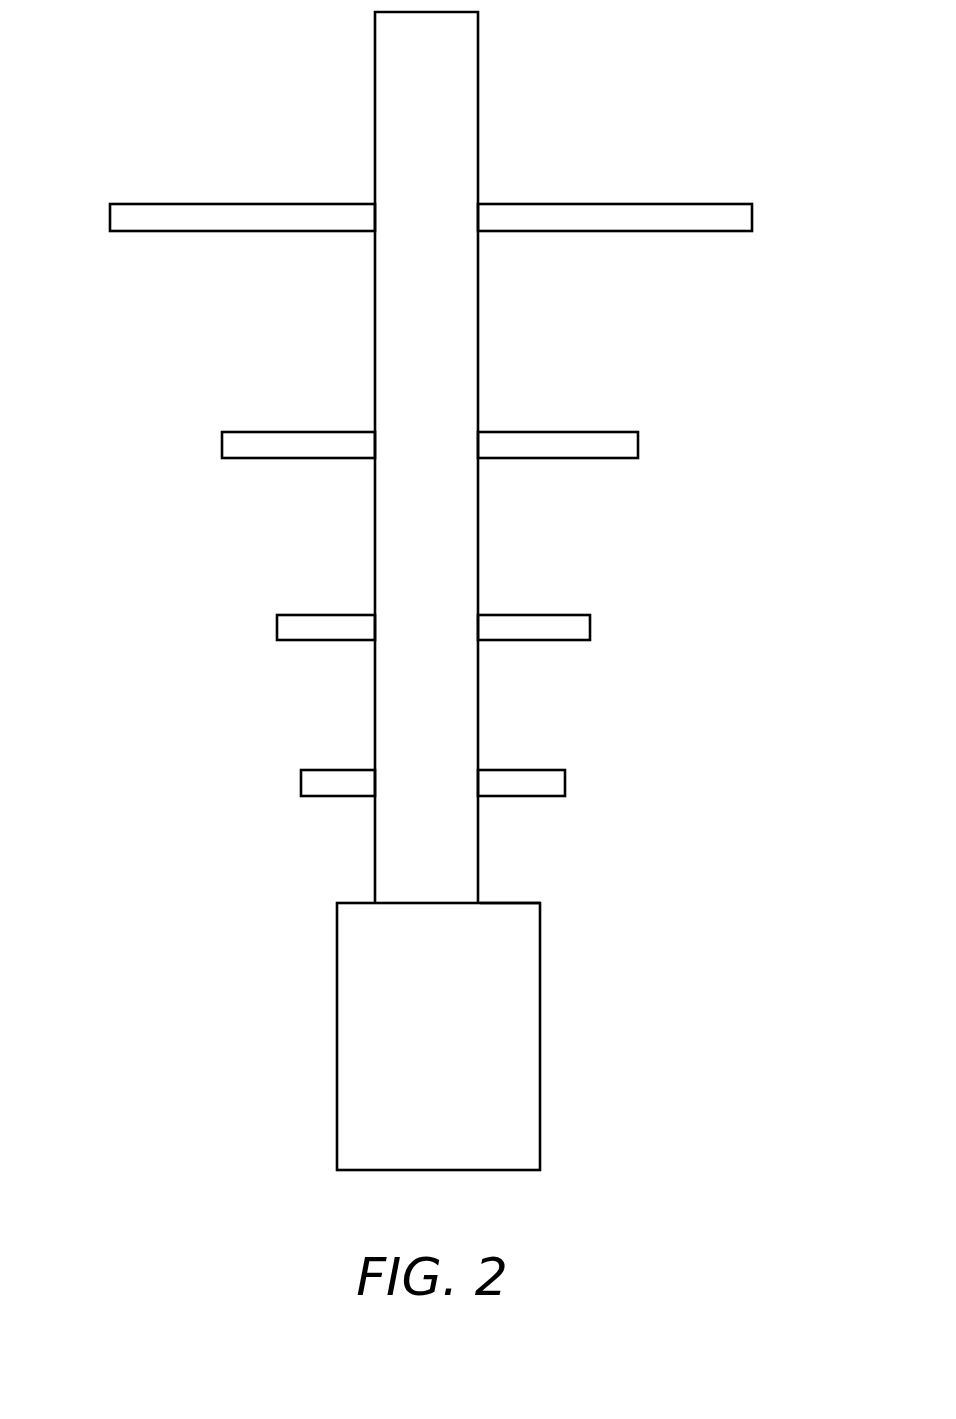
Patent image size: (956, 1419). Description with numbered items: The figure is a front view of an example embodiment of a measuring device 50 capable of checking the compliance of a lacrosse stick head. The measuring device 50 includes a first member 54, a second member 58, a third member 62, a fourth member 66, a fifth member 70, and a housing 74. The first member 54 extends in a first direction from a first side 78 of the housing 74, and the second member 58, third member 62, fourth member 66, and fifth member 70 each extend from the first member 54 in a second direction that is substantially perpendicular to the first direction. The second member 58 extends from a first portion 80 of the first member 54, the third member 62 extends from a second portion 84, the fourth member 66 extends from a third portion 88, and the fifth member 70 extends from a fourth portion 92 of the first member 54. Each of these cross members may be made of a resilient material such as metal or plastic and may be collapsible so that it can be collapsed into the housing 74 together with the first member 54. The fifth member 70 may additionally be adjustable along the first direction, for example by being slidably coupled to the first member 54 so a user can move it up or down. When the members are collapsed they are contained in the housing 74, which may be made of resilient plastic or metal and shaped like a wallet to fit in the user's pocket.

The measuring device 50 is at (602, 1049).
The first member 54 is at (428, 683).
The second member 58 is at (554, 787).
The third member 62 is at (310, 622).
The fourth member 66 is at (543, 440).
The fifth member 70 is at (231, 213).
The housing 74 is at (363, 1043).
The first side 78 is at (518, 903).
The first portion 80 is at (422, 782).
The second portion 84 is at (428, 637).
The third portion 88 is at (425, 458).
The fourth portion 92 is at (430, 210).